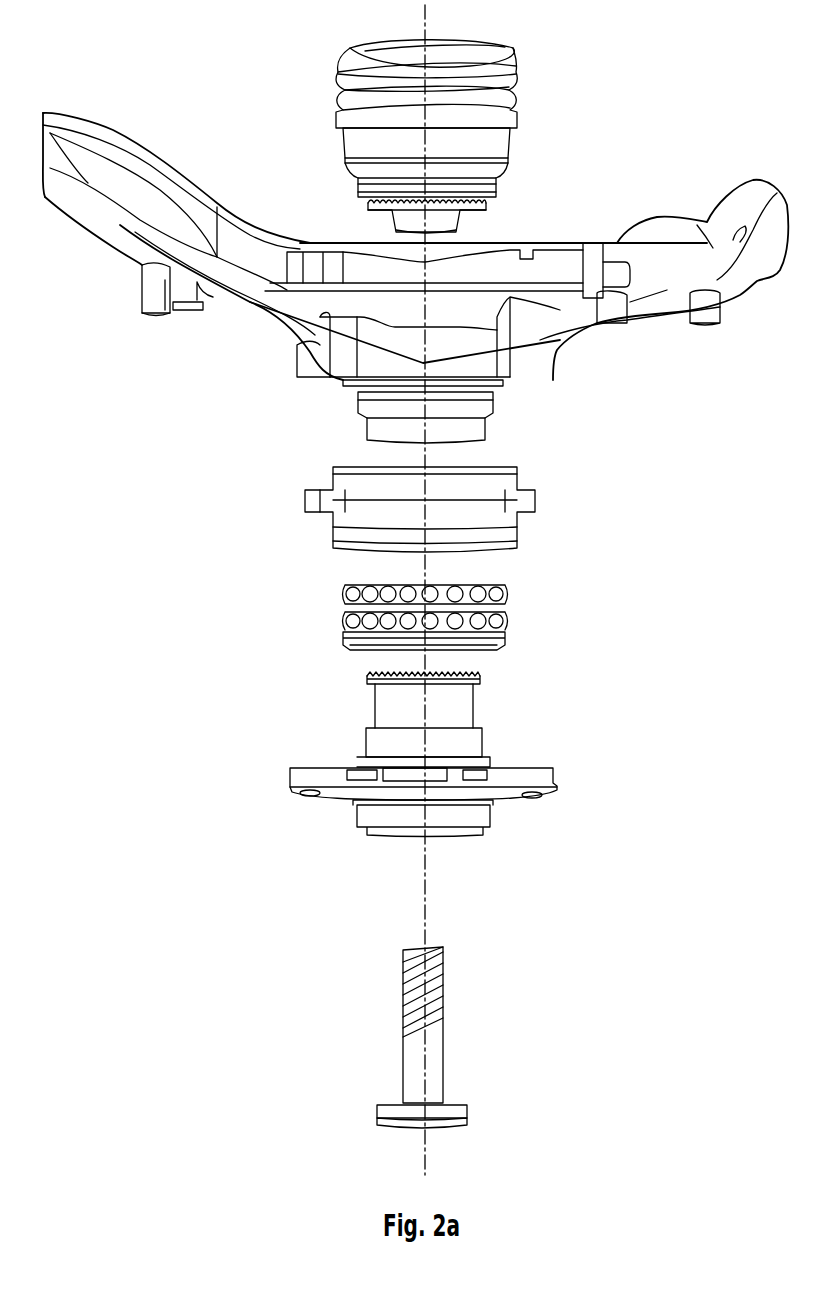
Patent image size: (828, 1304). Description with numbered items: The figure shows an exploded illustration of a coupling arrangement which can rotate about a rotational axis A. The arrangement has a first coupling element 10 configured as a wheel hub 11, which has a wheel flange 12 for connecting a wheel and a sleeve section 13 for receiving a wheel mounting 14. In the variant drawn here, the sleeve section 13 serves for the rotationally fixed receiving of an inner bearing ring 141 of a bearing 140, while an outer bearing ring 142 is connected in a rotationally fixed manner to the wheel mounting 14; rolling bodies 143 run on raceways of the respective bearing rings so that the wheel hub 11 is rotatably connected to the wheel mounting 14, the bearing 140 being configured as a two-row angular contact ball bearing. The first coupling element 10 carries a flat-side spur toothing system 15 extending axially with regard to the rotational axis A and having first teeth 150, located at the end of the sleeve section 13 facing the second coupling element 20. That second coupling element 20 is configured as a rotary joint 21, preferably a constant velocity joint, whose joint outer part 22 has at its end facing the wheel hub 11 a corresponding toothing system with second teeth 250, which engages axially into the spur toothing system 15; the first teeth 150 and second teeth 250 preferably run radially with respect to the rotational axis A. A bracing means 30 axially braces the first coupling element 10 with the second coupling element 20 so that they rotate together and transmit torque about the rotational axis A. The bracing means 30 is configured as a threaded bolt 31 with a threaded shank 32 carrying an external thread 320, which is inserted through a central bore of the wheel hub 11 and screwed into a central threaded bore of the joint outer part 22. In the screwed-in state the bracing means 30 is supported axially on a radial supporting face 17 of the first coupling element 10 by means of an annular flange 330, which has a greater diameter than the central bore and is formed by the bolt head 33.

The first coupling element 10 is at (370, 782).
The wheel hub 11 is at (370, 782).
The wheel flange 12 is at (498, 792).
The sleeve section 13 is at (385, 710).
The wheel mounting 14 is at (277, 290).
The spur toothing system 15 is at (488, 203).
The radial supporting face 17 is at (380, 836).
The second coupling element 20 is at (403, 136).
The rotary joint 21 is at (403, 136).
The joint outer part 22 is at (505, 152).
The bracing means 30 is at (400, 1053).
The threaded bolt 31 is at (400, 1053).
The threaded shank 32 is at (467, 1019).
The bolt head 33 is at (449, 1137).
The bearing 140 is at (357, 566).
The inner bearing ring 141 is at (390, 631).
The outer bearing ring 142 is at (335, 523).
The rolling bodies 143 is at (343, 597).
The first teeth 150 is at (367, 677).
The second teeth 250 is at (393, 215).
The external thread 320 is at (440, 963).
The annular flange 330 is at (465, 1115).
The rotational axis A is at (425, 863).